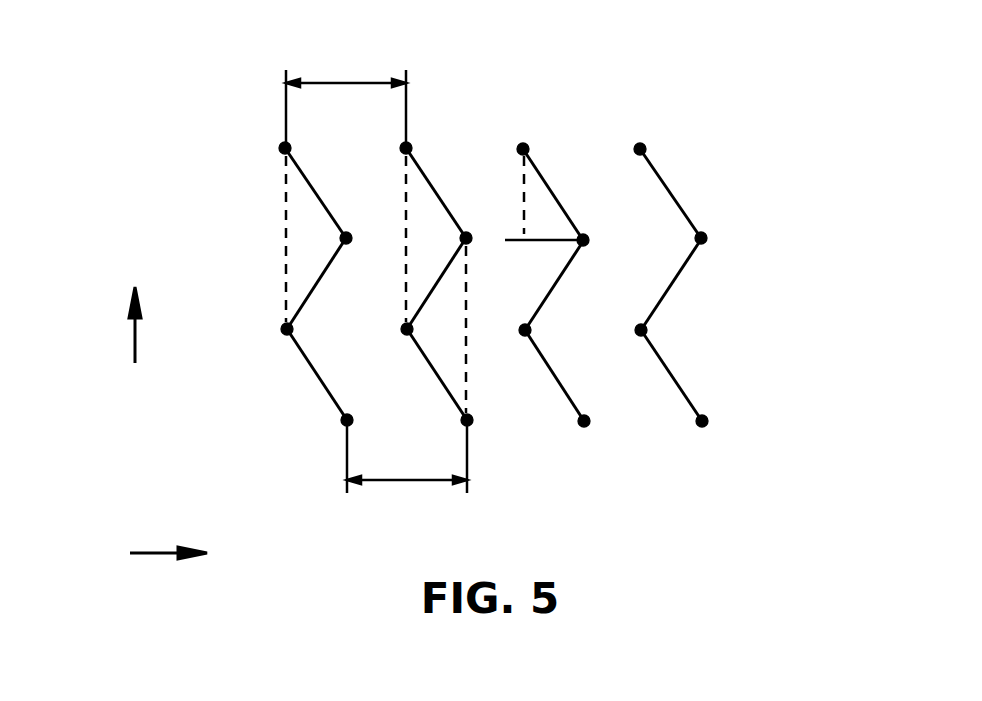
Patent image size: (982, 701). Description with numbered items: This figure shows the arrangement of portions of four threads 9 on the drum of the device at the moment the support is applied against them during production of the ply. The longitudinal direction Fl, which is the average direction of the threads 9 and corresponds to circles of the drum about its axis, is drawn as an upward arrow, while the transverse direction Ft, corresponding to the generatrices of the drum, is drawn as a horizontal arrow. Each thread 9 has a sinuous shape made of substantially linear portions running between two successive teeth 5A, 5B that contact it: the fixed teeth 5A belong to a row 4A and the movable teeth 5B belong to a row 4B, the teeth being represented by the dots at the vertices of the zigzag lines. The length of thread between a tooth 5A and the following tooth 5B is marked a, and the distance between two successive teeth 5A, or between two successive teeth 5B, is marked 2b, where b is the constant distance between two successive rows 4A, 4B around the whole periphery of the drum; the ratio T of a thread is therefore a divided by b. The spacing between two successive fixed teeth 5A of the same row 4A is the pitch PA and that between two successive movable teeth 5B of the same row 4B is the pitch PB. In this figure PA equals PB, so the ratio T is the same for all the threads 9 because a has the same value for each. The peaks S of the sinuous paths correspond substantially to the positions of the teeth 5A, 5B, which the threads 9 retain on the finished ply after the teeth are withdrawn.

The fixed teeth 5A is at (286, 149).
The movable teeth 5B is at (346, 238).
The row of fixed teeth 4A is at (641, 148).
The row of movable teeth 4B is at (702, 238).
The length of thread between a tooth 5A and a following tooth 5B a is at (315, 183).
The distance between two successive rows b is at (524, 207).
The distance between two successive teeth 5A or 5B 2b is at (406, 193).
The thread 9 is at (316, 373).
The peak of the sinuous path S is at (286, 148).
The distance between two successive fixed teeth 5A of the same row PA is at (346, 91).
The distance between two successive movable teeth 5B of the same row PB is at (407, 456).
The longitudinal direction Fl is at (132, 336).
The transverse direction Ft is at (167, 547).